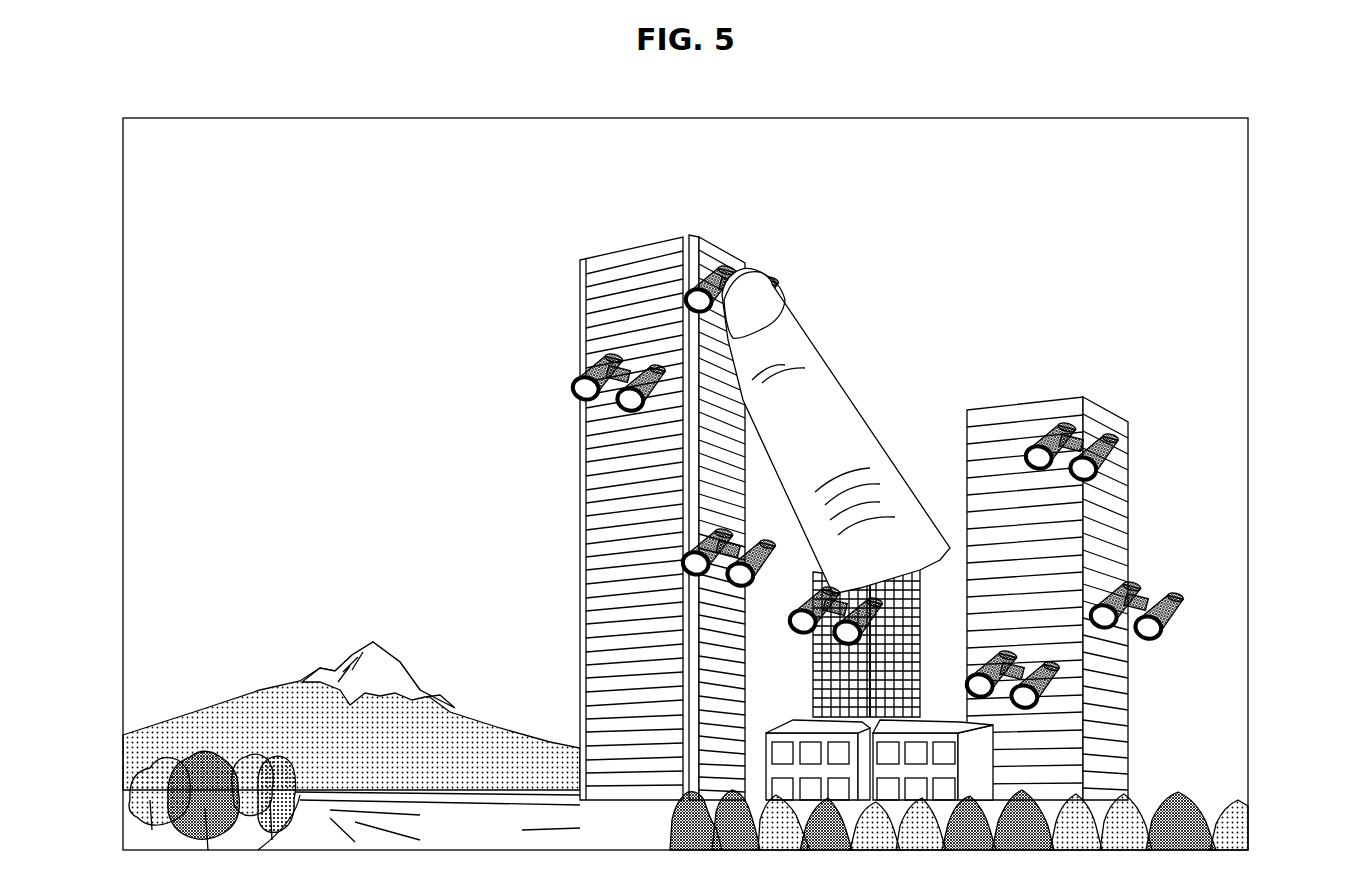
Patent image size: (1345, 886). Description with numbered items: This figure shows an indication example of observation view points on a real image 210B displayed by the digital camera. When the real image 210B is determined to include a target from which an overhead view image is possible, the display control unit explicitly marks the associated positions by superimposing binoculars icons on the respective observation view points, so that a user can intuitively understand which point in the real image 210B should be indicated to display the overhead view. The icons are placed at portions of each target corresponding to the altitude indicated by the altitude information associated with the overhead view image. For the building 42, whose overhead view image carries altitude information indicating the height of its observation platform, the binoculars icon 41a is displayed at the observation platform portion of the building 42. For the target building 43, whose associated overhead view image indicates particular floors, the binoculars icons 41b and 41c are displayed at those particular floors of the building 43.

The real image 210B is at (1094, 133).
The building 42 is at (598, 257).
The target building 43 is at (1125, 517).
The binoculars icon 41a is at (703, 262).
The binoculars icon 41b is at (1125, 436).
The binoculars icon 41c is at (1160, 602).